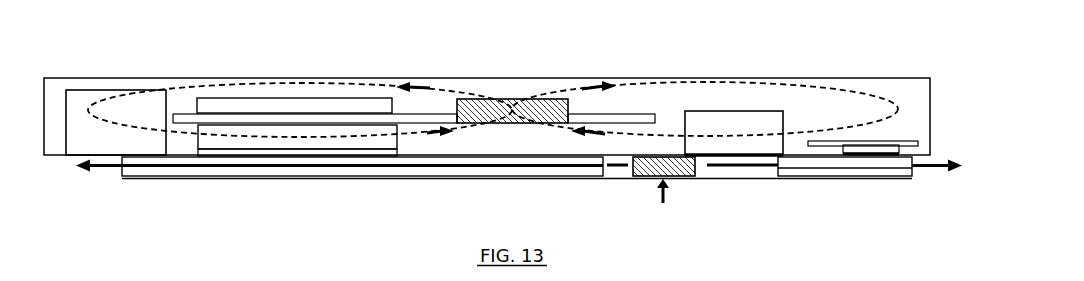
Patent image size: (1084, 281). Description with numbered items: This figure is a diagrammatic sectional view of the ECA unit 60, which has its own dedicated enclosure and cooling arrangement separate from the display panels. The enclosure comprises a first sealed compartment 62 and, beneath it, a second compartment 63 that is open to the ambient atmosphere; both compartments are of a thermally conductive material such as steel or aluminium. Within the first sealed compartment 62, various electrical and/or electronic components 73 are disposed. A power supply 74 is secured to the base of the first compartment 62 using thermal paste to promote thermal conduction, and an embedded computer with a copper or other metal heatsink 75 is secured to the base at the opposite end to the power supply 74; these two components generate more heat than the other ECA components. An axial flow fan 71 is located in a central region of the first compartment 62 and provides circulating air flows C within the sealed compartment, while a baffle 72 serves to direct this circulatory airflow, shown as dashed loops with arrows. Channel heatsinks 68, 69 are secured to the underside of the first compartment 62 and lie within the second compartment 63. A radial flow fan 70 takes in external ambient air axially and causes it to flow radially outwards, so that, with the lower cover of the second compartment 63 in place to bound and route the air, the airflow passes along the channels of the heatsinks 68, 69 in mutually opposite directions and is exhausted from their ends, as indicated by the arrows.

The ECA unit 60 is at (493, 26).
The first sealed compartment 62 is at (159, 77).
The second compartment 63 is at (413, 172).
The channel heatsink 68 is at (259, 171).
The channel heatsink 69 is at (840, 168).
The radial flow fan 70 is at (672, 167).
The axial flow fan 71 is at (518, 108).
The baffle 72 is at (430, 117).
The electrical and/or electronic components 73 is at (84, 110).
The power supply 74 is at (330, 133).
The embedded computer with heatsink 75 is at (887, 143).
The circulating air flows C is at (292, 82).